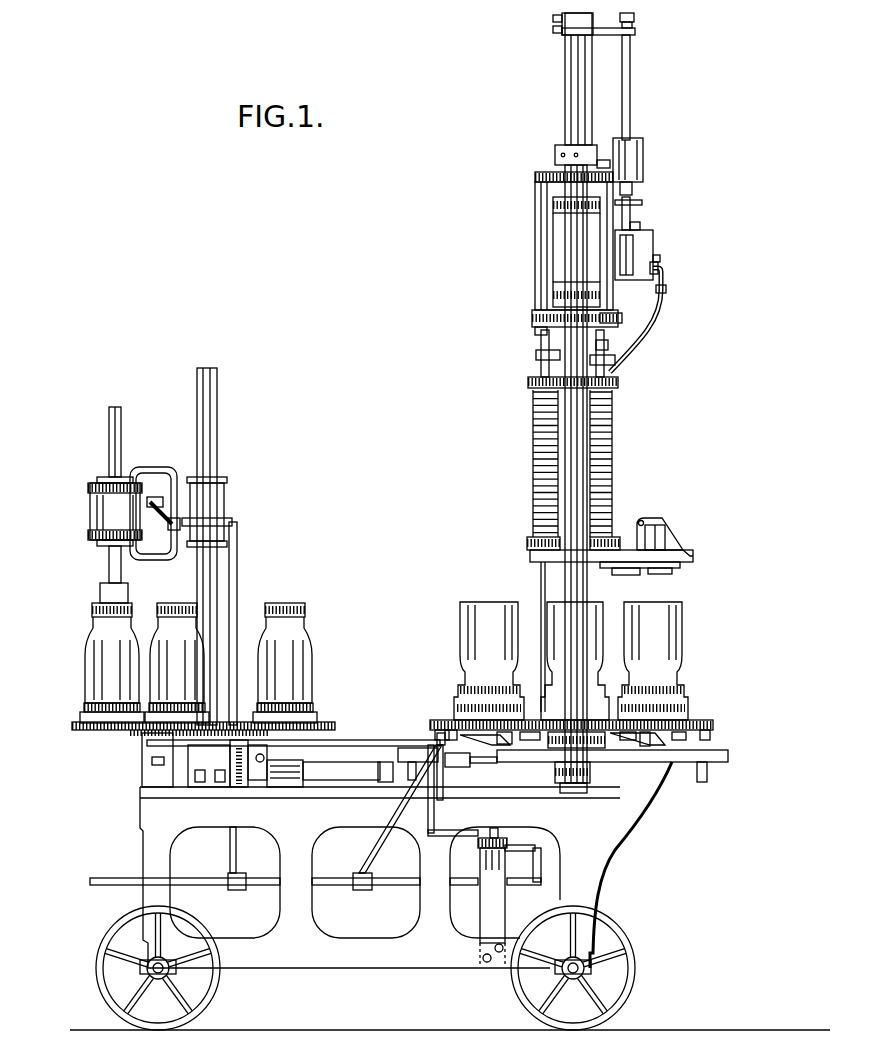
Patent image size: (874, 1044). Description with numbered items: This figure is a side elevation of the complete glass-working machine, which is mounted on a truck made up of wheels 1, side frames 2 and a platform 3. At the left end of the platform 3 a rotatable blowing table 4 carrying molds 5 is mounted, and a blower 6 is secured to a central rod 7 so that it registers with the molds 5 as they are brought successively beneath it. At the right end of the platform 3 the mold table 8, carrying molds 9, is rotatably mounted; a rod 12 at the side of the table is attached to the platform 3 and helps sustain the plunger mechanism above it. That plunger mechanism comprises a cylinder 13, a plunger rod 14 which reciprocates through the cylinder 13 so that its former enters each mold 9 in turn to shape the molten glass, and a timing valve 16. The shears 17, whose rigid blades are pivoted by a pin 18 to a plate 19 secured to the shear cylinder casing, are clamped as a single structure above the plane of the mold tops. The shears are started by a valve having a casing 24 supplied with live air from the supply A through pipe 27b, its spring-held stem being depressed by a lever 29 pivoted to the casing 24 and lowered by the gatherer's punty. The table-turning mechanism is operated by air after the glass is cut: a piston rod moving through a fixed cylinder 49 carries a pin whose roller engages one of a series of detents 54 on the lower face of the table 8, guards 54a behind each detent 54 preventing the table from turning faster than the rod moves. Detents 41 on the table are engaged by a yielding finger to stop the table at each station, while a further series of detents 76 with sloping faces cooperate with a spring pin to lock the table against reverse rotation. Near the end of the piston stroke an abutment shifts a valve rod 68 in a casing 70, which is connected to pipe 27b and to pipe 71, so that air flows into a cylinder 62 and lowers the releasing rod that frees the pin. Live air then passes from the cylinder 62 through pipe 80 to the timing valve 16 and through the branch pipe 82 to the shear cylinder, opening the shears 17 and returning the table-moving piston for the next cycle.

The wheels 1 is at (100, 940).
The side frames 2 is at (605, 852).
The platform 3 is at (140, 790).
The rotatable blowing table 4 is at (326, 722).
The molds 5 is at (88, 662).
The blower 6 is at (93, 505).
The central rod 7 is at (218, 436).
The mold table 8 is at (701, 722).
The molds 9 is at (462, 622).
The rod 12 is at (600, 430).
The cylinder 13 is at (536, 212).
The plunger rod 14 is at (566, 95).
The timing valve 16 is at (636, 268).
The shears 17 is at (620, 575).
The pin 18 is at (635, 565).
The plate 19 is at (535, 564).
The valve casing 24 is at (668, 541).
The pipe 27b is at (370, 860).
The lever 29 is at (690, 555).
The detents 41 is at (437, 740).
The fixed cylinder 49 is at (368, 745).
The detents 54 is at (500, 745).
The guards 54a is at (520, 750).
The cylinder 62 is at (487, 861).
The valve rod 68 is at (455, 765).
The casing 70 is at (418, 762).
The pipe 71 is at (432, 825).
The detents 76 is at (442, 723).
The pipe 80 is at (537, 850).
The branch pipe 82 is at (612, 365).
The live air supply A is at (107, 878).